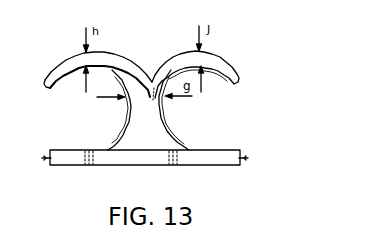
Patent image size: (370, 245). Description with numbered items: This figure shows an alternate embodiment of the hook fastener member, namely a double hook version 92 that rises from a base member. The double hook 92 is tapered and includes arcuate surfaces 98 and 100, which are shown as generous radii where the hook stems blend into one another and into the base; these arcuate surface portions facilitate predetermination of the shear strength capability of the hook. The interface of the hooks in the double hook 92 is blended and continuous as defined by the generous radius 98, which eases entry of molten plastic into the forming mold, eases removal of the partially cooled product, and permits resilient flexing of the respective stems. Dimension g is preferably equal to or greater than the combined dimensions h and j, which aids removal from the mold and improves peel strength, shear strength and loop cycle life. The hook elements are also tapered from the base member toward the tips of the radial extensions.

The double hook version 92 is at (164, 103).
The arcuate surface 98 is at (117, 110).
The arcuate surface 100 is at (167, 128).